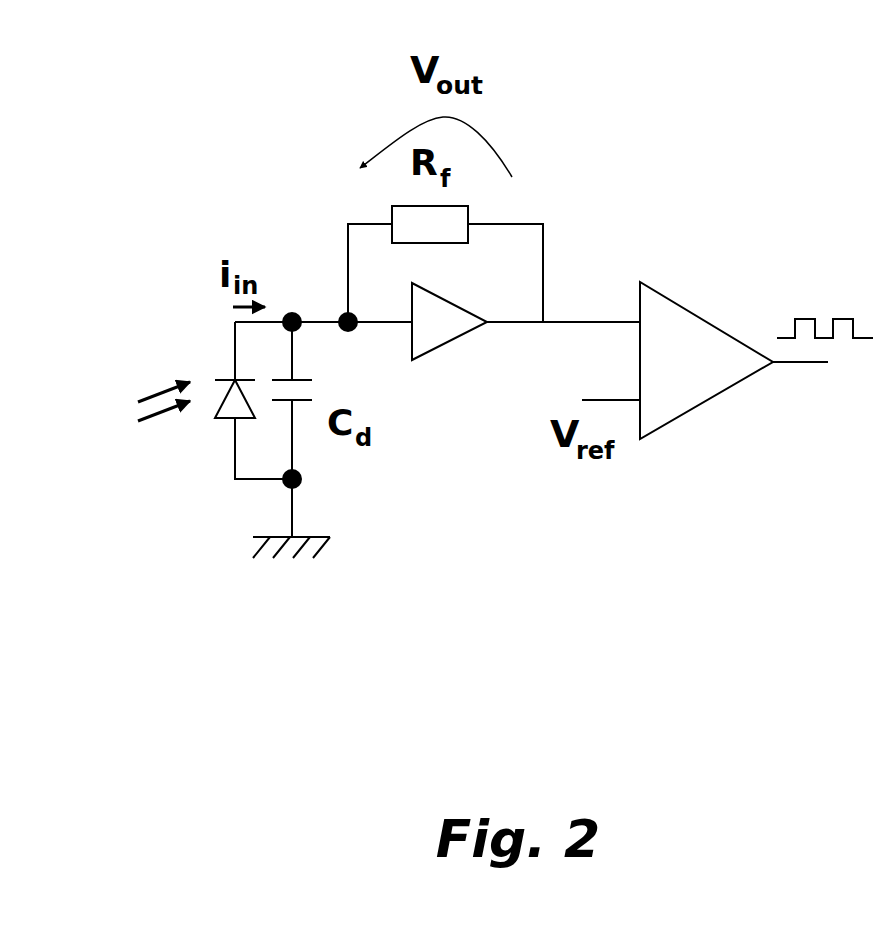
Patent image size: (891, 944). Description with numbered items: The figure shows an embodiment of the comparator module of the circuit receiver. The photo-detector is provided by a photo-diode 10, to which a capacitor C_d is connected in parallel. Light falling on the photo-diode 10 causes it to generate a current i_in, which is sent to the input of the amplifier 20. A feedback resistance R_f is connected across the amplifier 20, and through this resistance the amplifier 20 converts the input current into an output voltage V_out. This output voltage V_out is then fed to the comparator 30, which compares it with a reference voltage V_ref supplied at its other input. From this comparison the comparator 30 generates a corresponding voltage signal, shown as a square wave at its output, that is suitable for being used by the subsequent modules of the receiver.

The photo-diode 10 is at (238, 412).
The amplifier 20 is at (442, 317).
The comparator 30 is at (682, 358).